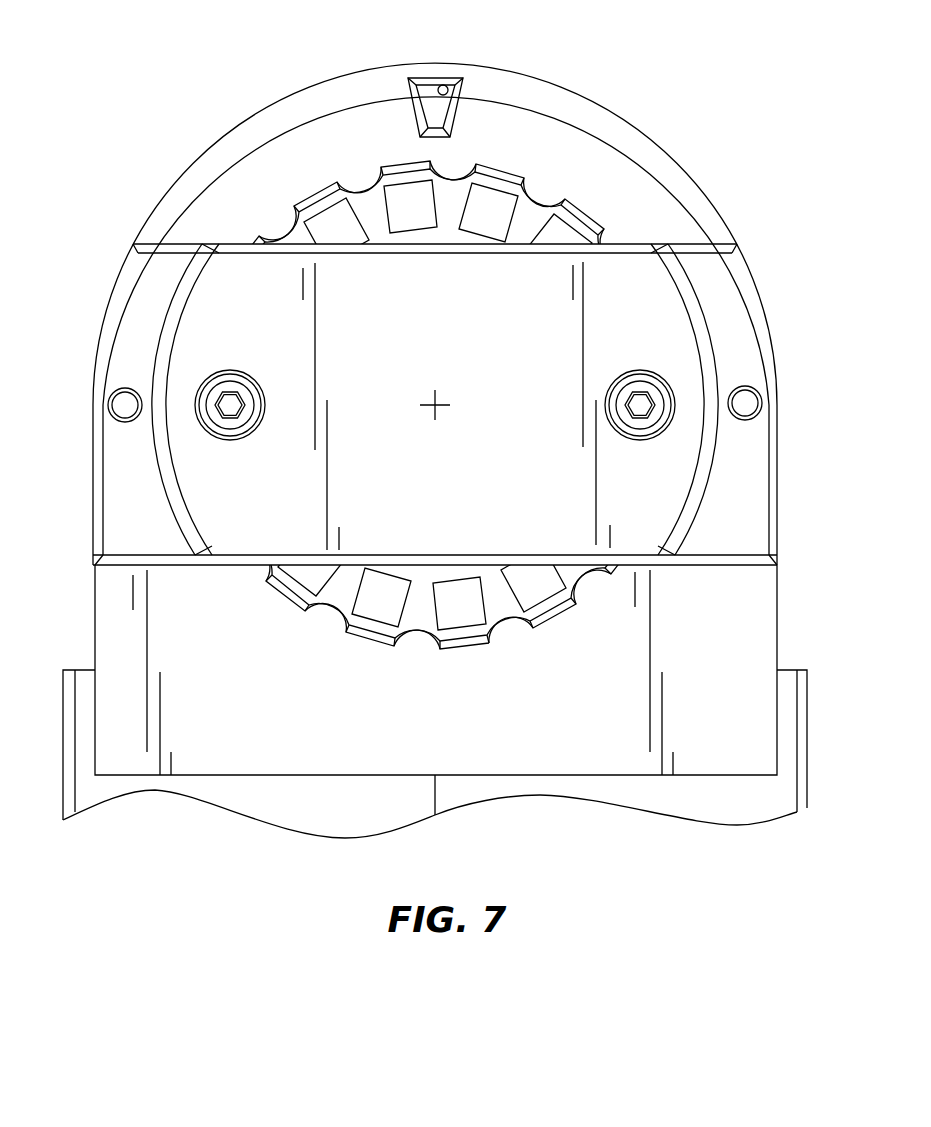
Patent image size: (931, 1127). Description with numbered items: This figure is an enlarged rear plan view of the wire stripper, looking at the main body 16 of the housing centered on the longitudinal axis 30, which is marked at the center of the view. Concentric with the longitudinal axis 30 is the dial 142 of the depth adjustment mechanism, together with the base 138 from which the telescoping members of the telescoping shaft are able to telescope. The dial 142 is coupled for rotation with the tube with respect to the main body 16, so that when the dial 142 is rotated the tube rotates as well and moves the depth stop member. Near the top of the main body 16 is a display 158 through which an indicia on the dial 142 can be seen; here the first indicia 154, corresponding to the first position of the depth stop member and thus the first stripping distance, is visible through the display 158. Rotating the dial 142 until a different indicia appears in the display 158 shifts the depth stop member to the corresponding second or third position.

The main body 16 is at (230, 163).
The longitudinal axis 30 is at (440, 400).
The base 138 is at (418, 520).
The dial 142 is at (502, 605).
The first indicia 154 is at (415, 102).
The display 158 is at (442, 83).